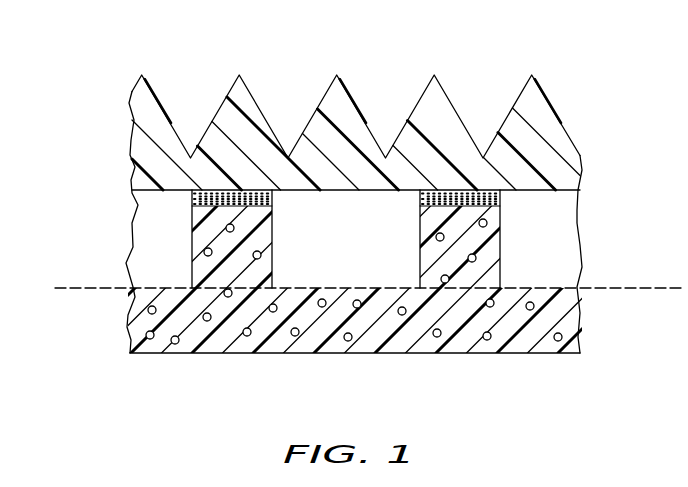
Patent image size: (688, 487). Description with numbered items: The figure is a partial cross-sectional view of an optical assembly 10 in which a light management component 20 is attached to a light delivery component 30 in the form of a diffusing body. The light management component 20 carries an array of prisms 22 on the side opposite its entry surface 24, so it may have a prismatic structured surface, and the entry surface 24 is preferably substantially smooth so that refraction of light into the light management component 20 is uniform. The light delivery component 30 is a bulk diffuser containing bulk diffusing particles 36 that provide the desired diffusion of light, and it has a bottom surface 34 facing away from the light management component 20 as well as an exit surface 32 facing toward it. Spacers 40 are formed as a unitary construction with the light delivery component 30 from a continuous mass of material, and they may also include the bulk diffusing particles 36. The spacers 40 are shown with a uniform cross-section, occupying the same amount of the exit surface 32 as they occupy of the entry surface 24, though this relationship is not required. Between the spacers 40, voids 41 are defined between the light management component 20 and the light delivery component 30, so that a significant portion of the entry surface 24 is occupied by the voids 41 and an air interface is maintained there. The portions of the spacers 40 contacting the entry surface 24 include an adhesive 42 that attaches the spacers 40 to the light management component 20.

The optical assembly 10 is at (83, 97).
The light management component 20 is at (558, 118).
The prisms 22 is at (323, 99).
The entry surface 24 is at (367, 190).
The light delivery component 30 is at (572, 316).
The exit surface 32 is at (302, 288).
The bottom surface 34 is at (507, 353).
The bulk diffusing particles 36 is at (471, 263).
The spacers 40 is at (192, 262).
The voids 41 is at (152, 249).
The adhesive 42 is at (192, 203).